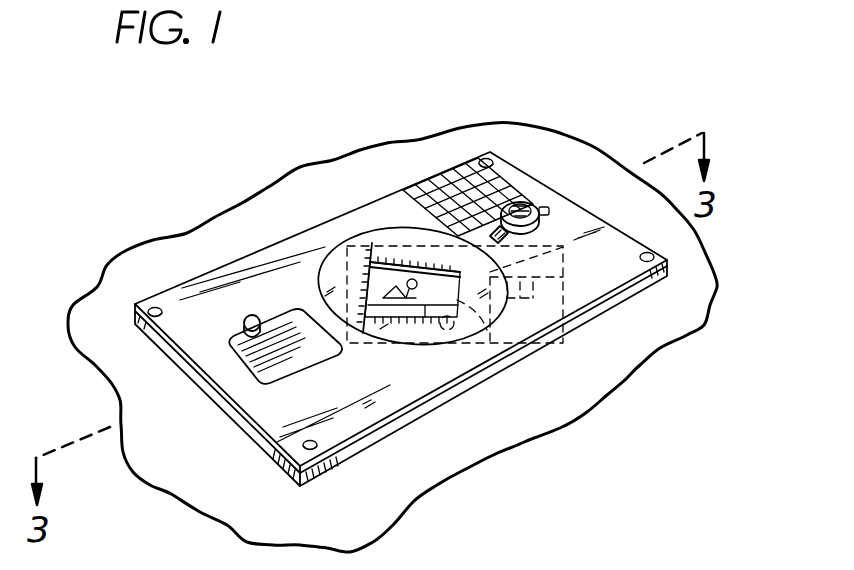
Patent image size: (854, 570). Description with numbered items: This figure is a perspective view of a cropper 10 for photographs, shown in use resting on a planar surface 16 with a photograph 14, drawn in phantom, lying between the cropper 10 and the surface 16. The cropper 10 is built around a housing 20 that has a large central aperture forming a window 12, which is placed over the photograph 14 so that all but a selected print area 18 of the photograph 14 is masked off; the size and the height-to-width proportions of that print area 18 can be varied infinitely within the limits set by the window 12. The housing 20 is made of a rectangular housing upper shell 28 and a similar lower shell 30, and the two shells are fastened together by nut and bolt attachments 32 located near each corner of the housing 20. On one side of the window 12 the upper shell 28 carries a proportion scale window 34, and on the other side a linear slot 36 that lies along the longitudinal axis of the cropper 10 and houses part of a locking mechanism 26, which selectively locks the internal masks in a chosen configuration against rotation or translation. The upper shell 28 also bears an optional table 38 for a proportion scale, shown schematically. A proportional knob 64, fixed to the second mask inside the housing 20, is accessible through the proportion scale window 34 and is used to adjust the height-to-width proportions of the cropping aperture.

The cropper 10 is at (404, 104).
The window 12 is at (362, 215).
The photograph 14 is at (562, 335).
The planar surface 16 is at (718, 286).
The selected print area 18 is at (384, 272).
The housing 20 is at (256, 457).
The locking mechanism 26 is at (540, 190).
The housing upper shell 28 is at (394, 410).
The lower shell 30 is at (448, 408).
The nut and bolt attachments 32 is at (497, 158).
The proportion scale window 34 is at (258, 381).
The linear slot 36 is at (550, 210).
The table for a proportion scale 38 is at (457, 182).
The proportional knob 64 is at (244, 328).